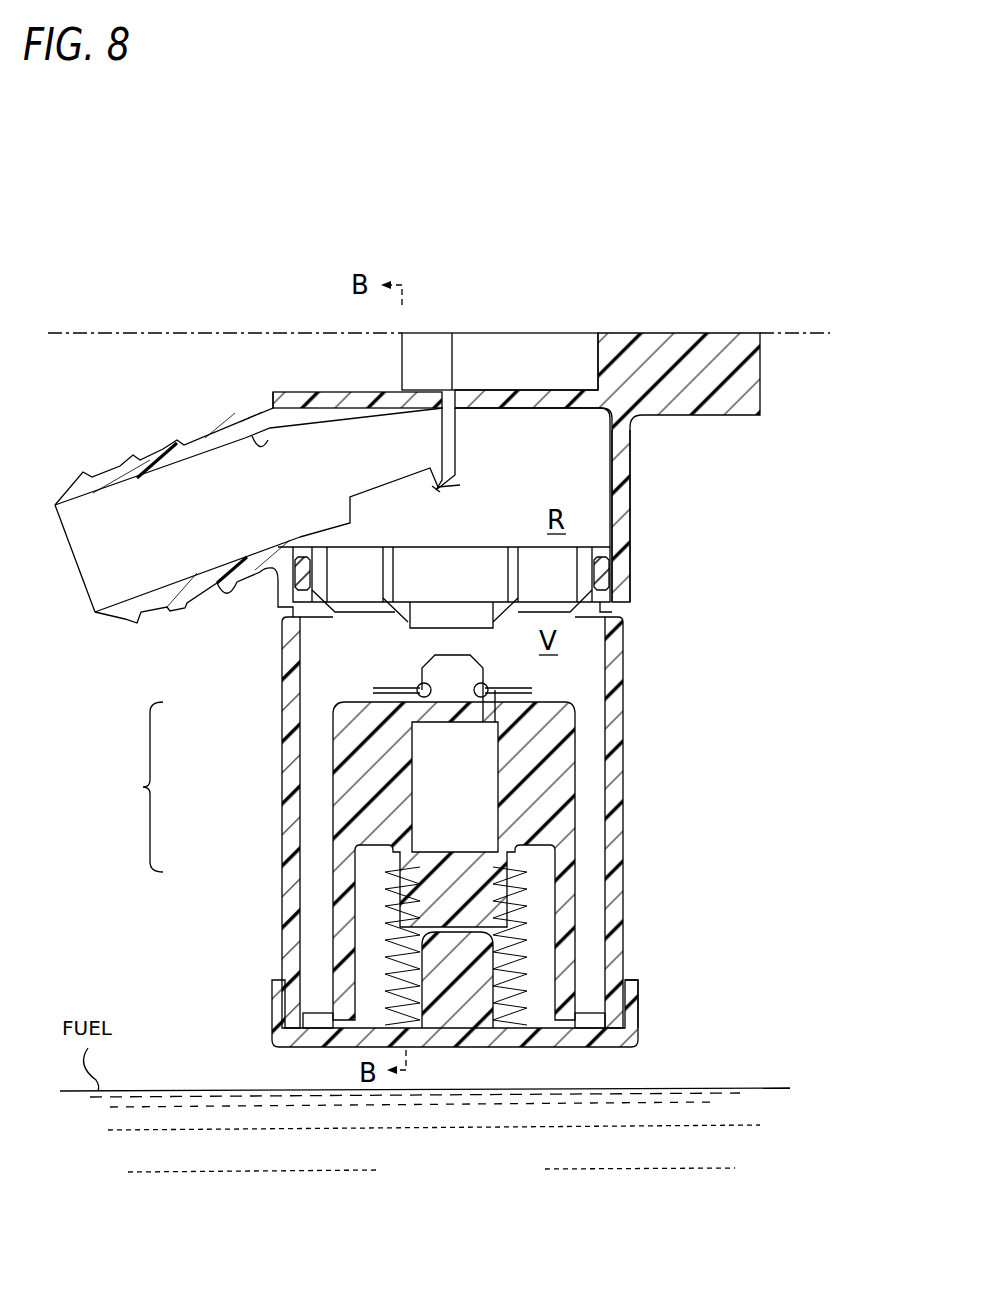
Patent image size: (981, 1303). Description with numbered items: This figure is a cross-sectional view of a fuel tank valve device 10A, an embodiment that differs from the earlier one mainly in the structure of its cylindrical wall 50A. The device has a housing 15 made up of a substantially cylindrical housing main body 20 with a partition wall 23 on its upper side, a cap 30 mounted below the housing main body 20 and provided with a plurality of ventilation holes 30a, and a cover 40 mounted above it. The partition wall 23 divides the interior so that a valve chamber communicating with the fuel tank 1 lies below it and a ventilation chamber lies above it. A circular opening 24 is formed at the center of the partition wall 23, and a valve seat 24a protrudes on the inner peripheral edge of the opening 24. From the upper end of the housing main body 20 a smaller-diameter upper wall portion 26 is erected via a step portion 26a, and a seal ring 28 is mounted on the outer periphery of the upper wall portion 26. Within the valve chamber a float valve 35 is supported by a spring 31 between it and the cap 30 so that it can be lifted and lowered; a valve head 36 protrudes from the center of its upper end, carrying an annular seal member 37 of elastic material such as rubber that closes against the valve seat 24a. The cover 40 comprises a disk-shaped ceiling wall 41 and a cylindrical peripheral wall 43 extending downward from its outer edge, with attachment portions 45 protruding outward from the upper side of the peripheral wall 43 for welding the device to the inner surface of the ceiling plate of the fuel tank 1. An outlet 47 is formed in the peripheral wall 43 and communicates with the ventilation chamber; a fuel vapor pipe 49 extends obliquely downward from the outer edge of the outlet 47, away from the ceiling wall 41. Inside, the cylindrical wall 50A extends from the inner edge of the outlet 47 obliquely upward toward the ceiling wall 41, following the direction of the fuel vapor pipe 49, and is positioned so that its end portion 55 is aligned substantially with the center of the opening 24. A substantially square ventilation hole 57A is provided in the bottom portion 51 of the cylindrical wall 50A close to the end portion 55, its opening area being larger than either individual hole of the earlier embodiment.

The fuel tank 1 is at (147, 333).
The fuel tank valve device 10A is at (475, 328).
The housing 15 is at (135, 787).
The housing main body 20 is at (270, 786).
The partition wall 23 is at (535, 612).
The opening 24 is at (458, 610).
The valve seat 24a is at (408, 622).
The upper wall portion 26 is at (600, 592).
The step portion 26a is at (622, 612).
The seal ring 28 is at (614, 567).
The cap 30 is at (258, 1032).
The ventilation holes 30a is at (592, 1040).
The spring 31 is at (522, 918).
The float valve 35 is at (567, 746).
The valve head 36 is at (472, 656).
The annular seal member 37 is at (532, 689).
The cover 40 is at (257, 545).
The ceiling wall 41 is at (510, 396).
The peripheral wall 43 is at (616, 498).
The attachment portions 45 is at (752, 400).
The outlet 47 is at (253, 410).
The fuel vapor pipe 49 is at (148, 460).
The cylindrical wall 50A is at (470, 476).
The bottom portion 51 is at (313, 530).
The end portion 55 is at (448, 452).
The ventilation hole 57A is at (425, 492).